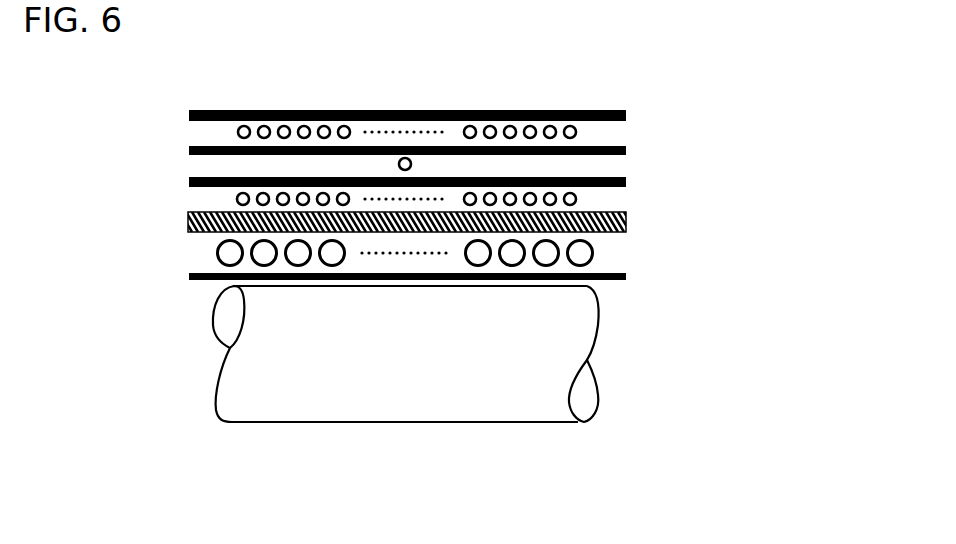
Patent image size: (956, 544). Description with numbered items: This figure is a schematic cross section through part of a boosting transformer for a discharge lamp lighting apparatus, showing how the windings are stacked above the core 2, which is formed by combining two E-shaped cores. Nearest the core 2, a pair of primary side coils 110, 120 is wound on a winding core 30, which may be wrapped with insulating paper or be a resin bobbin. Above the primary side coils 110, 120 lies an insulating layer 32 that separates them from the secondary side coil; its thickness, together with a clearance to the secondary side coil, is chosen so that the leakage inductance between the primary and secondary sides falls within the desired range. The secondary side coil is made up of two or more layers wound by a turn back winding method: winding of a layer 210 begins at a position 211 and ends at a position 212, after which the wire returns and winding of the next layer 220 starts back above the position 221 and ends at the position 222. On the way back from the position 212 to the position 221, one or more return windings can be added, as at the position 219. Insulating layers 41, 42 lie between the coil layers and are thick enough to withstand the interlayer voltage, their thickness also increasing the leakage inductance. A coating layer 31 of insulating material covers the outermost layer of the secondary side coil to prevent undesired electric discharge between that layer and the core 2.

The core 2 is at (310, 422).
The winding core 30 is at (190, 276).
The coating layer 31 is at (190, 114).
The insulating layer 32 is at (189, 222).
The insulating layer 41 is at (190, 182).
The insulating layer 42 is at (190, 149).
The primary side coil 110 is at (535, 237).
The primary side coil 120 is at (405, 253).
The layer 210 is at (483, 131).
The position 211 is at (242, 192).
The position 212 is at (632, 210).
The position 219 is at (404, 157).
The next layer 220 is at (517, 98).
The position 221 is at (244, 124).
The position 222 is at (550, 95).